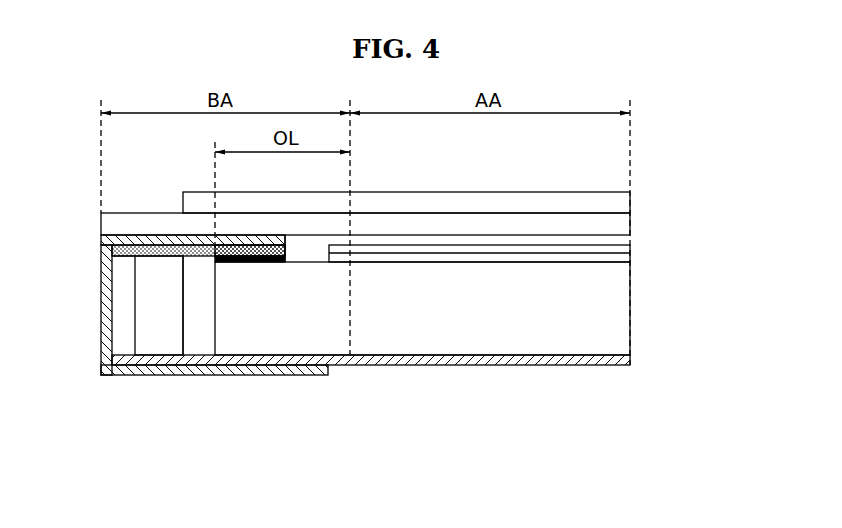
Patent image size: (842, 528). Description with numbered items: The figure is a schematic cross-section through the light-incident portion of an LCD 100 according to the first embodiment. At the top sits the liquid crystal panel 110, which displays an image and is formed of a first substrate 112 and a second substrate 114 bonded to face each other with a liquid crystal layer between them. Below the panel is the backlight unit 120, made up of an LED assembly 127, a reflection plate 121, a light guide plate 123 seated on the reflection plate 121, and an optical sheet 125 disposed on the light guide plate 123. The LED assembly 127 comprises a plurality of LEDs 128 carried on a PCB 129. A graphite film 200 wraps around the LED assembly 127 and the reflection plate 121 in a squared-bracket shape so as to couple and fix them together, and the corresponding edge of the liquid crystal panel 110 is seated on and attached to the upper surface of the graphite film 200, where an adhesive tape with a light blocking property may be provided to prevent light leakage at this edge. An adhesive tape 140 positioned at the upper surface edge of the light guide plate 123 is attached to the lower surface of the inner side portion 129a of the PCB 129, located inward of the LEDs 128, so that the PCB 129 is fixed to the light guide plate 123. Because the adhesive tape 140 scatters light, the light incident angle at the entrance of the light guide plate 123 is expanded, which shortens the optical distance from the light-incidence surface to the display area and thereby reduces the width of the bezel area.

The LCD 100 is at (416, 448).
The liquid crystal panel 110 is at (704, 197).
The first substrate 112 is at (622, 225).
The second substrate 114 is at (622, 202).
The backlight unit 120 is at (717, 253).
The reflection plate 121 is at (622, 358).
The light guide plate 123 is at (622, 298).
The optical sheet 125 is at (632, 251).
The LED assembly 127 is at (212, 449).
The LEDs 128 is at (157, 343).
The PCB 129 is at (190, 258).
The inner side portion of the PCB 129a is at (212, 250).
The adhesive tape 140 is at (250, 263).
The graphite film 200 is at (100, 322).